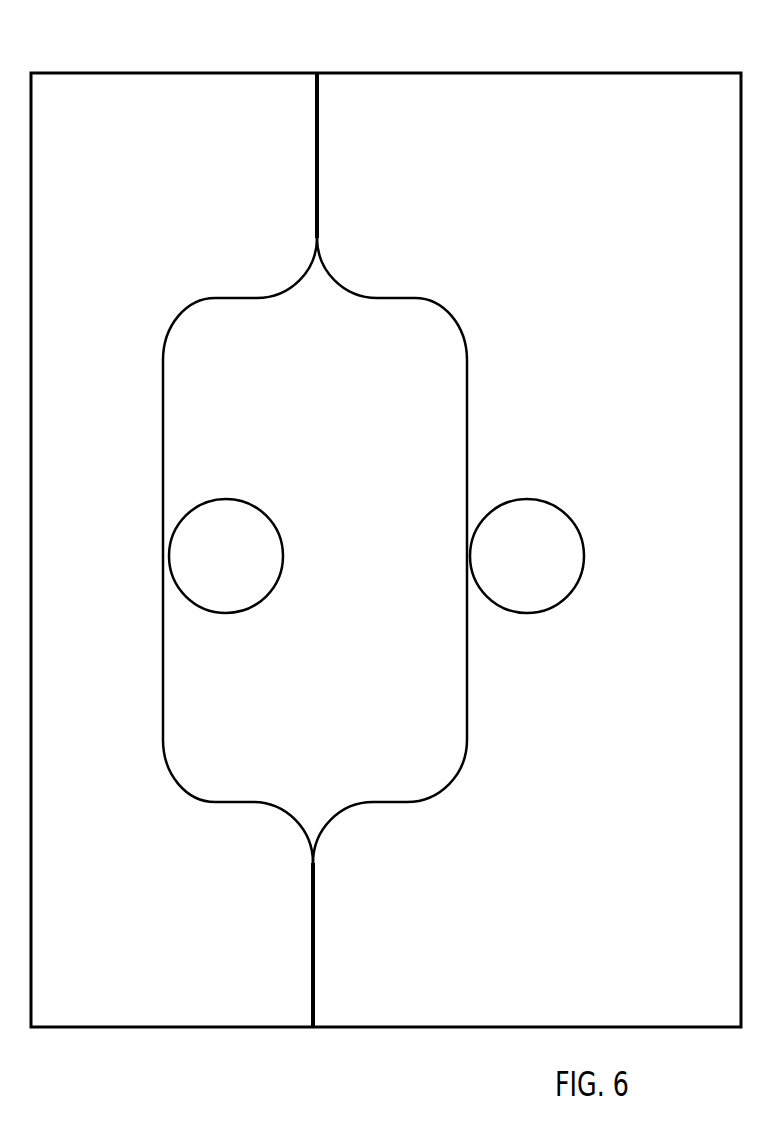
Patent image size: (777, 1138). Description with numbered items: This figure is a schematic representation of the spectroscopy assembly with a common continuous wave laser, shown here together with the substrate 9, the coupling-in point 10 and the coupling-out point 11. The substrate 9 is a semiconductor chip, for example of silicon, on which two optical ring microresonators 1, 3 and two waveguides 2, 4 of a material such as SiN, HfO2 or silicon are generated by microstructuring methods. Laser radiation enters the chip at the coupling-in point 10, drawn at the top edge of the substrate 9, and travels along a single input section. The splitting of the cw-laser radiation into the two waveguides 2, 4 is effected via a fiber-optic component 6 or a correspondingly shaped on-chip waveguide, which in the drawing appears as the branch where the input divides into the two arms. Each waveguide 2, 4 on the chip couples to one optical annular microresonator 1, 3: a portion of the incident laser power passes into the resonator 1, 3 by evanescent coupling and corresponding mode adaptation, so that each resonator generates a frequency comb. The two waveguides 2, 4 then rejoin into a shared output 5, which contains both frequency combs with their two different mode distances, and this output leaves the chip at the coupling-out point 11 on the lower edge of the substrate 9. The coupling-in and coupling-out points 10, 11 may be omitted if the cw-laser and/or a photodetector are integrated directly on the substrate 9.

The optical ring microresonator 1 is at (219, 569).
The waveguide 2 is at (161, 430).
The optical ring microresonator 3 is at (520, 569).
The waveguide 4 is at (465, 430).
The shared output 5 is at (311, 949).
The fiber-optic component 6 is at (315, 152).
The substrate 9 is at (703, 112).
The coupling-in point 10 is at (318, 72).
The coupling-out point 11 is at (313, 1028).